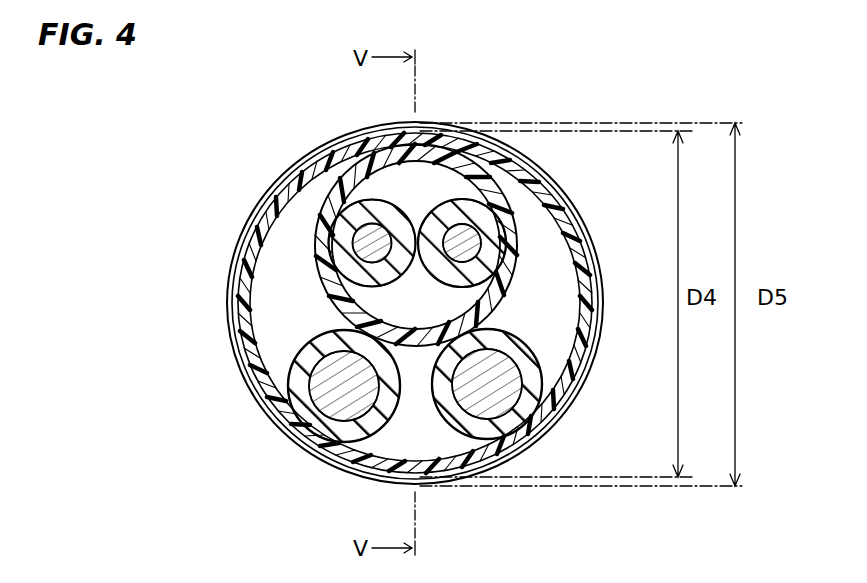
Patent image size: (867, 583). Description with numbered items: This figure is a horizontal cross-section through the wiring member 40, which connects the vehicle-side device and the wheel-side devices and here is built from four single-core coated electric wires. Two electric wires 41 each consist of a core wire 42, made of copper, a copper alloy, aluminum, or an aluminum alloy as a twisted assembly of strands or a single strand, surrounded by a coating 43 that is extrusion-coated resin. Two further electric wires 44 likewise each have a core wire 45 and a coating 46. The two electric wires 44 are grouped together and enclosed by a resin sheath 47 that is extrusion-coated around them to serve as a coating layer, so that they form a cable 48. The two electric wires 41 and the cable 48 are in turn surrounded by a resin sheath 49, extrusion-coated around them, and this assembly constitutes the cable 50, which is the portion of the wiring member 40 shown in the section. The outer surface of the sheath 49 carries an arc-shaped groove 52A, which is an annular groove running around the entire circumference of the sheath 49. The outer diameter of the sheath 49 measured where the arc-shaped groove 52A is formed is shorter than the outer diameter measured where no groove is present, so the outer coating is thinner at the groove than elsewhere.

The wiring member 40 is at (377, 319).
The cable 50 is at (298, 147).
The sheath 49 is at (265, 387).
The arc-shaped groove 52A is at (282, 421).
The sheath 47 is at (500, 291).
The cable 48 is at (332, 302).
The electric wire 44 is at (434, 294).
The core wire 45 is at (366, 243).
The coating 46 is at (345, 258).
The electric wire 41 is at (443, 428).
The core wire 42 is at (337, 398).
The coating 43 is at (352, 428).